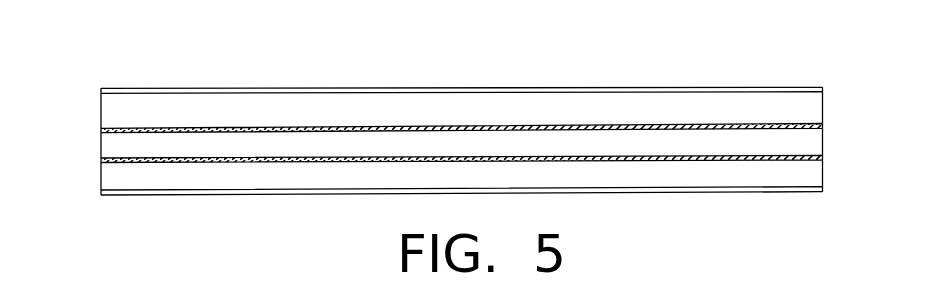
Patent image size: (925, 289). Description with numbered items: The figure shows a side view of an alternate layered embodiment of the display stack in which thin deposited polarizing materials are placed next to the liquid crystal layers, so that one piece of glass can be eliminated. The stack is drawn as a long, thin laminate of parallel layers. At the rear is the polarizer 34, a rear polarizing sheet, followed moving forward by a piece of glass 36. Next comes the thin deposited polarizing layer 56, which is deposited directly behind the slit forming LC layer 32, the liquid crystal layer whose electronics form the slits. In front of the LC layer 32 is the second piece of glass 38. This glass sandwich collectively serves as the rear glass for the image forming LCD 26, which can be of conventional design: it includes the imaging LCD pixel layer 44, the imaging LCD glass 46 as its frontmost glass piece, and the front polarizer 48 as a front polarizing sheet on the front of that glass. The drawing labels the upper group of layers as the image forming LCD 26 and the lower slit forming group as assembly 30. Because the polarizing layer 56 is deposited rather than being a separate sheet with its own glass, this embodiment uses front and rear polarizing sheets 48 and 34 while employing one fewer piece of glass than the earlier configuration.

The image forming LCD 26 is at (99, 106).
The lower laminate portion 30 is at (99, 172).
The front polarizer 48 is at (822, 87).
The imaging LCD glass 46 is at (822, 108).
The imaging LCD pixel layer 44 is at (822, 127).
The second piece of glass 38 is at (822, 140).
The LC layer 32 is at (822, 157).
The thin deposited polarizing layer 56 is at (822, 161).
The piece of glass 36 is at (822, 178).
The polarizer 34 is at (822, 192).